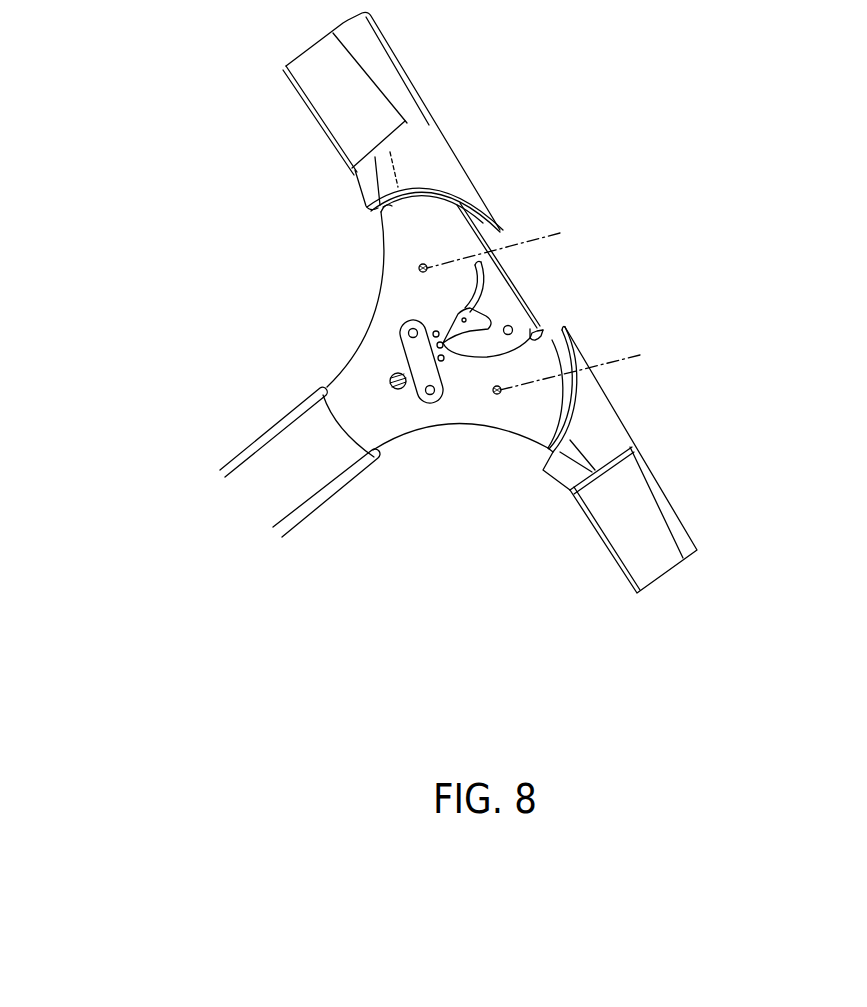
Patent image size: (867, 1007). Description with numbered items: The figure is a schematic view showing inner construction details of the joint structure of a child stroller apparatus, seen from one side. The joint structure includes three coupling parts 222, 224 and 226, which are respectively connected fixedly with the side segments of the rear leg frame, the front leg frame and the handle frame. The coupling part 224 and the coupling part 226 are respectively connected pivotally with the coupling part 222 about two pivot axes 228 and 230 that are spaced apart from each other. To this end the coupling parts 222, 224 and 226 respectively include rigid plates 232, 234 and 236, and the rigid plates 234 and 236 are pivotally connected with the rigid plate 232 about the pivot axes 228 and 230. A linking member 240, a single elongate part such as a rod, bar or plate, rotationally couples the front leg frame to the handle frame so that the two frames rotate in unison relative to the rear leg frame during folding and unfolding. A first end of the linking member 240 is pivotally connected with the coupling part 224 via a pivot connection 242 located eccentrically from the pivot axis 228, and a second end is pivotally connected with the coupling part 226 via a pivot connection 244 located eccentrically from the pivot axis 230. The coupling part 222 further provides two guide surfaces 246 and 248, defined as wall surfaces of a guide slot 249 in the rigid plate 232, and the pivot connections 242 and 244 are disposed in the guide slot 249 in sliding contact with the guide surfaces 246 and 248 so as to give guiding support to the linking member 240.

The coupling part 222 is at (337, 360).
The coupling part 224 is at (617, 403).
The coupling part 226 is at (440, 158).
The pivot axis 228 is at (620, 353).
The pivot axis 230 is at (540, 227).
The rigid plate 232 is at (393, 247).
The rigid plate 234 is at (554, 452).
The rigid plate 236 is at (450, 195).
The linking member 240 is at (420, 407).
The pivot connection 242 is at (443, 398).
The pivot connection 244 is at (413, 333).
The guide surface 246 is at (533, 335).
The guide surface 248 is at (487, 277).
The guide slot 249 is at (494, 290).